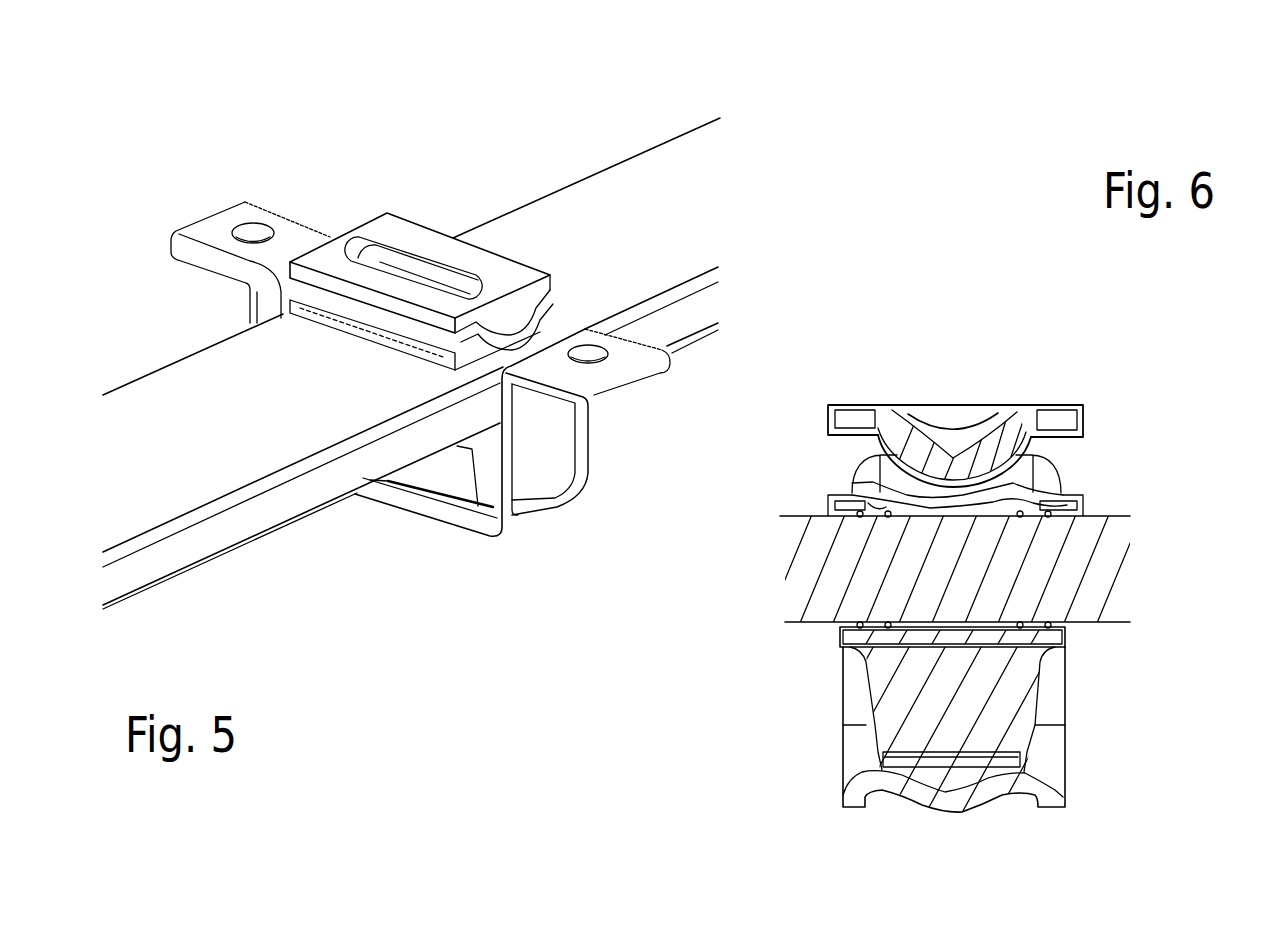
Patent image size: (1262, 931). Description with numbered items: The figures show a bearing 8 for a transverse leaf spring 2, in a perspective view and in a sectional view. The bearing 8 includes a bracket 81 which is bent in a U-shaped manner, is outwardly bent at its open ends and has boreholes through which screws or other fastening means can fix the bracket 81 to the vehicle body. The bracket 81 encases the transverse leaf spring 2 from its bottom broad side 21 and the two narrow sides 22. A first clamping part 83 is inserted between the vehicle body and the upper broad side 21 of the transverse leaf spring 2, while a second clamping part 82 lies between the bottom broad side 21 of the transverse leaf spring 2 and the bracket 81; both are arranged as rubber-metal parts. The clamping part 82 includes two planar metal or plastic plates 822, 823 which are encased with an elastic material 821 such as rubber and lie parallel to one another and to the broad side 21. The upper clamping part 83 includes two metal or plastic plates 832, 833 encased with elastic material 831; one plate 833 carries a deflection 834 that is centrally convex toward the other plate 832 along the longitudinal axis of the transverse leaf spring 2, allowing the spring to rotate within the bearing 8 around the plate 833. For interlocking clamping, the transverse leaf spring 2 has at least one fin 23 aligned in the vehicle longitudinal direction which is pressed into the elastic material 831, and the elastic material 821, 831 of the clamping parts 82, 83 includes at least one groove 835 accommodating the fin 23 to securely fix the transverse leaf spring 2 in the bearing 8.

In FIG. 5, the transverse leaf spring 2 is at (466, 351).
In FIG. 6, the transverse leaf spring 2 is at (945, 527).
In FIG. 5, the broad side 21 is at (540, 205).
In FIG. 5, the narrow side 22 is at (675, 320).
In FIG. 6, the fin 23 is at (888, 622).
In FIG. 5, the bearing 8 is at (420, 389).
In FIG. 5, the bracket 81 is at (493, 525).
In FIG. 5, the second clamping part 82 is at (437, 470).
In FIG. 6, the second clamping part 82 is at (917, 722).
In FIG. 5, the first clamping part 83 is at (403, 232).
In FIG. 6, the first clamping part 83 is at (1010, 394).
In FIG. 6, the elastic material 821 is at (1007, 708).
In FIG. 6, the plate 822 is at (907, 760).
In FIG. 6, the plate 823 is at (855, 635).
In FIG. 6, the elastic material 831 is at (985, 423).
In FIG. 6, the plate 832 is at (1067, 509).
In FIG. 6, the plate 833 is at (1058, 423).
In FIG. 6, the deflection 834 is at (927, 467).
In FIG. 6, the groove 835 is at (879, 508).